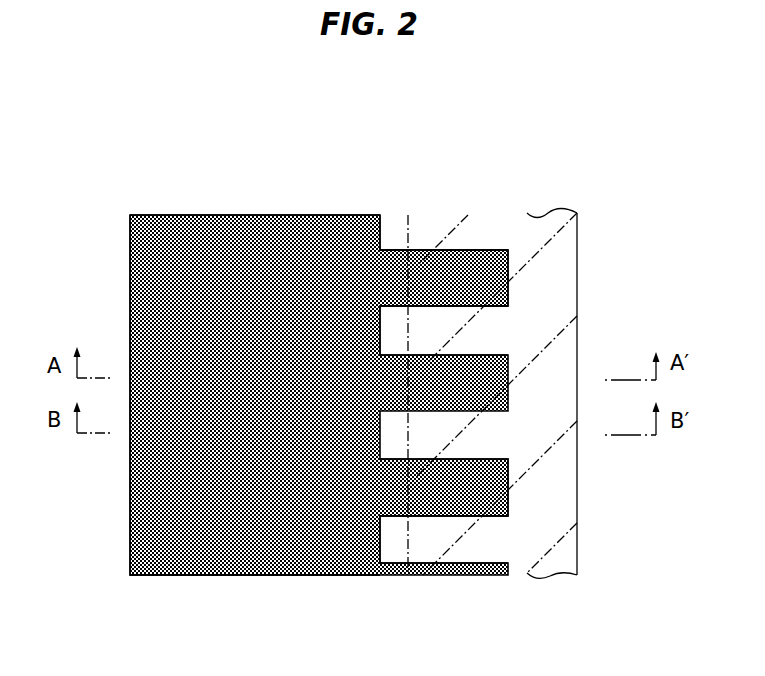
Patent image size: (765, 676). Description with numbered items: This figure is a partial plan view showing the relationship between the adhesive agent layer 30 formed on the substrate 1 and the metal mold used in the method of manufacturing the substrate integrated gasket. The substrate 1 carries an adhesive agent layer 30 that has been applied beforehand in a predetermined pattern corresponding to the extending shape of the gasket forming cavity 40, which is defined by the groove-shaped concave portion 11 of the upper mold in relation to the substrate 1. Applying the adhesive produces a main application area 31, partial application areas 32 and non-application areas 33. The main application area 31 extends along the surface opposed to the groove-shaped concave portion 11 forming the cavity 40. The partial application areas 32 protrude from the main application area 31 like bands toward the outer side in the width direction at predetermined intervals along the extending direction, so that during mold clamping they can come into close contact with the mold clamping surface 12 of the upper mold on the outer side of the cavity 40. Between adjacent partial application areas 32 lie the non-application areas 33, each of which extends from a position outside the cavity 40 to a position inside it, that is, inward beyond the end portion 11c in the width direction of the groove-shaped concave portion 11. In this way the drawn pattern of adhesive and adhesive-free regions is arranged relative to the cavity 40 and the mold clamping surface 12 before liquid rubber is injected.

The substrate 1 is at (570, 238).
The groove-shaped concave portion 11 is at (247, 258).
The end portion in width direction of groove-shaped concave portion 11c is at (407, 268).
The mold clamping surface 12 is at (497, 240).
The adhesive agent layer 30 is at (195, 295).
The main application area 31 is at (382, 593).
The partial application areas 32 is at (490, 275).
The non-application areas 33 is at (465, 333).
The gasket forming cavity 40 is at (319, 362).